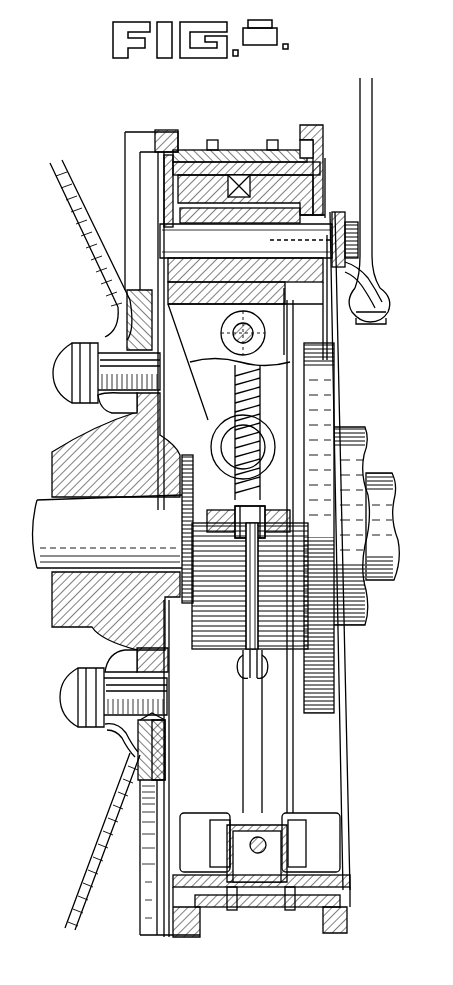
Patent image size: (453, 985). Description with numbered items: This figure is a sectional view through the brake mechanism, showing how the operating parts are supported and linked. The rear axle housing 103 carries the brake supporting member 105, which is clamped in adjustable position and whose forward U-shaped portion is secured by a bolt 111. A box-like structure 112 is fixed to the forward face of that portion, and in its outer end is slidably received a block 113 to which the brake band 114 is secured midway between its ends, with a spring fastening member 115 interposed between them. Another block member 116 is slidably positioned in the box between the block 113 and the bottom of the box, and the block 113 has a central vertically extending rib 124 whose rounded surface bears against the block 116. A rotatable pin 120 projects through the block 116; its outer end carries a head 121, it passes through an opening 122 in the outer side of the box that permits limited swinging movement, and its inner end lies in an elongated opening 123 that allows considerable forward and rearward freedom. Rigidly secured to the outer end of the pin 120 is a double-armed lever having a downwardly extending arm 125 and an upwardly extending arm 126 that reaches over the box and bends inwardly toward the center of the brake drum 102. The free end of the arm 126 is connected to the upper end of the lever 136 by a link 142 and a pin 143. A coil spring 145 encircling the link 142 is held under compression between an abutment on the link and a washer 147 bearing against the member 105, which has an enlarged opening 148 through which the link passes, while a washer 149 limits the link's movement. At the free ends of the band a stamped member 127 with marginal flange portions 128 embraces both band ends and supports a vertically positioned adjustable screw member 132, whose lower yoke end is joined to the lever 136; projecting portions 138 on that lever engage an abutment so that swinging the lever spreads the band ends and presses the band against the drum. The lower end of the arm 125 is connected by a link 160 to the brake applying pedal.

The brake drum 102 is at (189, 147).
The central vertically extending rib 124 is at (233, 188).
The spring fastening member 115 is at (243, 202).
The block 113 is at (283, 162).
The link 160 is at (363, 105).
The brake band 114 is at (170, 193).
The opening 122 is at (168, 213).
The head 121 is at (153, 230).
The box-like structure 112 is at (325, 183).
The elongated opening 123 is at (322, 197).
The upwardly extending arm 126 is at (358, 222).
The downwardly extending arm 125 is at (357, 277).
The rotatable pin 120 is at (246, 241).
The block member 116 is at (247, 327).
The bolt 111 is at (252, 337).
The coil spring 145 is at (234, 397).
The rear axle housing 103 is at (360, 443).
The washer 147 is at (290, 509).
The enlarged opening 148 is at (212, 521).
The brake supporting member 105 is at (215, 540).
The washer 149 is at (265, 534).
The link 142 is at (252, 625).
The pin 143 is at (266, 670).
The lever 136 is at (262, 770).
The stamped member 127 is at (268, 835).
The adjustable screw member 132 is at (258, 853).
The projecting portions 138 is at (188, 875).
The marginal flange portions 128 is at (347, 893).